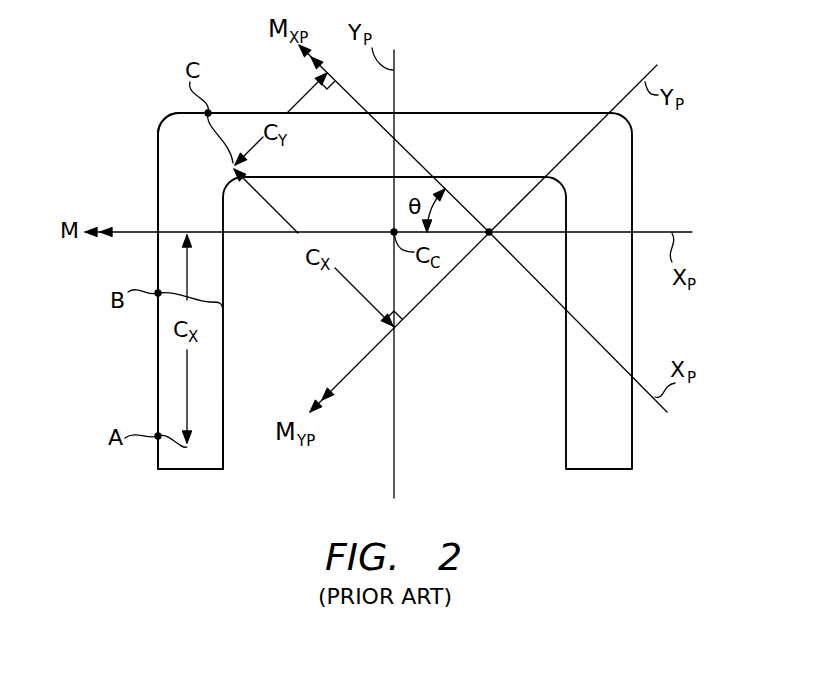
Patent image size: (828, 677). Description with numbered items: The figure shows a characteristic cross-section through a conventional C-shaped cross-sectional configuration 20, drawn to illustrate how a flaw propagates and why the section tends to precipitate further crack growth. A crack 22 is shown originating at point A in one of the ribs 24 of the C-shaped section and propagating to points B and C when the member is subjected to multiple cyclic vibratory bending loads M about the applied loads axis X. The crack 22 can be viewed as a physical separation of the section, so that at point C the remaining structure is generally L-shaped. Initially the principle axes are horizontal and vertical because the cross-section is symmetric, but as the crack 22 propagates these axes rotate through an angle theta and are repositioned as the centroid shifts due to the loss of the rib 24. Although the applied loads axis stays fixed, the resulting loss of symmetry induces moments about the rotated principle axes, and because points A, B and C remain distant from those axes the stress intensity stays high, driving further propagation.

The C-shaped cross-sectional configuration 20 is at (487, 128).
The crack 22 is at (214, 143).
The rib 24 is at (167, 368).